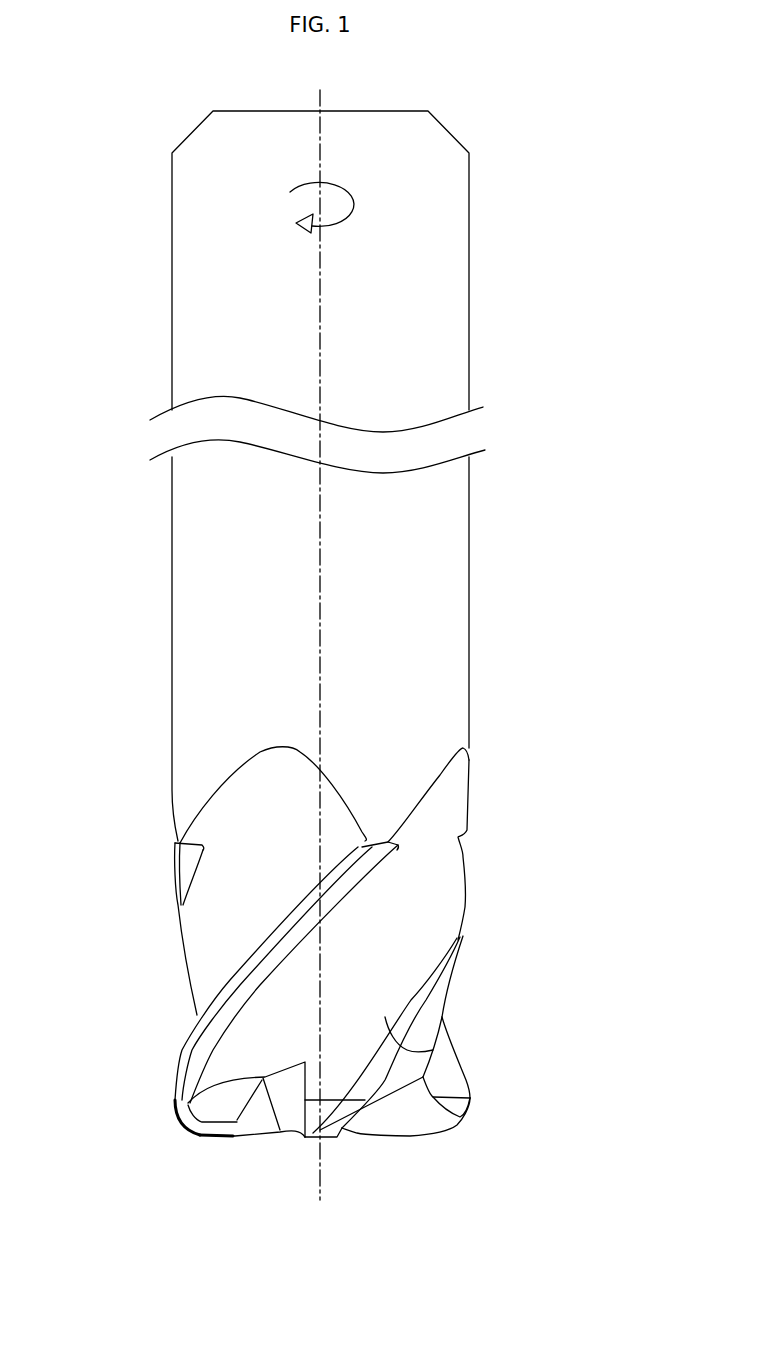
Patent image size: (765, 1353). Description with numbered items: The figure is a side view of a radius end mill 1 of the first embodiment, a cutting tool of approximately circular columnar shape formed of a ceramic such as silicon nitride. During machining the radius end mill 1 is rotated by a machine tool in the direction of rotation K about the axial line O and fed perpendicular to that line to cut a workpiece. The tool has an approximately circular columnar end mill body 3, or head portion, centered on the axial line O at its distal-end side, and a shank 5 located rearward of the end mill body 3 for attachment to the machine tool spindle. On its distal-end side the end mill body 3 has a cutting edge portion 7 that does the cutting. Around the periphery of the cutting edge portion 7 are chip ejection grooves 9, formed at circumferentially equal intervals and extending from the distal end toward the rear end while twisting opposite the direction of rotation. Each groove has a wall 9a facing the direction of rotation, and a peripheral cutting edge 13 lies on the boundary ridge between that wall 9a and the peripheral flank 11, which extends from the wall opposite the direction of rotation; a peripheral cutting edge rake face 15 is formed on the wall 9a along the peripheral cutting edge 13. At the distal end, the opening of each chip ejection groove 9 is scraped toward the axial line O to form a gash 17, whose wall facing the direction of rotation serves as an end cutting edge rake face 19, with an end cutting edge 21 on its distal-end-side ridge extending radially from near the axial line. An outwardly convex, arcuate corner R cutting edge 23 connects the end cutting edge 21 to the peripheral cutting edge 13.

The radius end mill 1 is at (586, 555).
The end mill body 3 is at (430, 627).
The shank 5 is at (423, 247).
The cutting edge portion 7 is at (514, 923).
The chip ejection groove 9 is at (230, 913).
The wall of chip ejection groove 9a is at (437, 975).
The peripheral flank 11 is at (217, 995).
The peripheral cutting edge 13 is at (230, 975).
The peripheral cutting edge rake face 15 is at (433, 1050).
The gash 17 is at (278, 1108).
The end cutting edge rake face 19 is at (417, 1118).
The end cutting edge 21 is at (237, 1137).
The corner R cutting edge 23 is at (182, 1125).